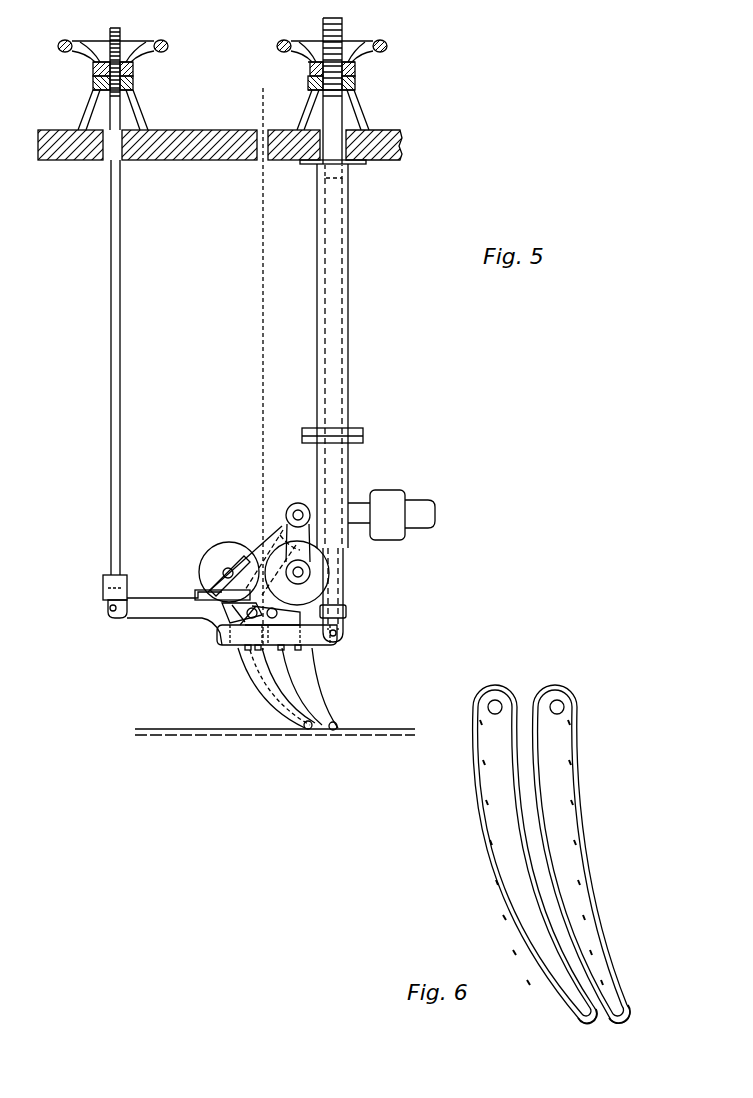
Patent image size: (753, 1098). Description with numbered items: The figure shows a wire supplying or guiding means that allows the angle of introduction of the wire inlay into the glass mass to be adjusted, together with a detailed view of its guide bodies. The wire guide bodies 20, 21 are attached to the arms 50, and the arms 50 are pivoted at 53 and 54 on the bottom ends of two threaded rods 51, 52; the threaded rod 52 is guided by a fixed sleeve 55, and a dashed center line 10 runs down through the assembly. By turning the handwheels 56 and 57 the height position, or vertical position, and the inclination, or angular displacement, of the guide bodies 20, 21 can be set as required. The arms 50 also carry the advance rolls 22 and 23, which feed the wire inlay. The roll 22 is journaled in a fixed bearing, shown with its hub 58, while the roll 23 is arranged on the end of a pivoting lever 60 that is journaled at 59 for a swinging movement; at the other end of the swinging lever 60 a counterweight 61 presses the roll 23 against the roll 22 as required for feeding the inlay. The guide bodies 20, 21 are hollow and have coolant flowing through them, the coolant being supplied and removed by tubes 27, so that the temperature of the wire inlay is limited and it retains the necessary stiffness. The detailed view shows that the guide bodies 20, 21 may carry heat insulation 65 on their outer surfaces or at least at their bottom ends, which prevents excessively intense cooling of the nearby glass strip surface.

In FIG. 5, the center line of implement 10 is at (263, 313).
In FIG. 5, the guide body 20 is at (258, 665).
In FIG. 6, the guide body 20 is at (493, 762).
In FIG. 5, the guide body 21 is at (300, 672).
In FIG. 6, the guide body 21 is at (558, 780).
In FIG. 5, the advance roll 22 is at (222, 548).
In FIG. 5, the advance roll 23 is at (318, 575).
In FIG. 5, the tubes 27 is at (245, 613).
In FIG. 6, the tubes 27 is at (557, 700).
In FIG. 5, the arms 50 is at (175, 613).
In FIG. 5, the threaded rod 51 is at (115, 443).
In FIG. 5, the threaded rod 52 is at (340, 594).
In FIG. 5, the pivot 53 is at (105, 606).
In FIG. 5, the pivot 54 is at (334, 633).
In FIG. 5, the fixed sleeve 55 is at (345, 405).
In FIG. 5, the handwheel 56 is at (132, 60).
In FIG. 5, the handwheel 57 is at (357, 57).
In FIG. 5, the eccentric hub 58 is at (222, 573).
In FIG. 5, the journal 59 is at (298, 503).
In FIG. 5, the pivoting lever 60 is at (283, 526).
In FIG. 5, the counterweight 61 is at (395, 502).
In FIG. 6, the heat insulation 65 is at (628, 1012).